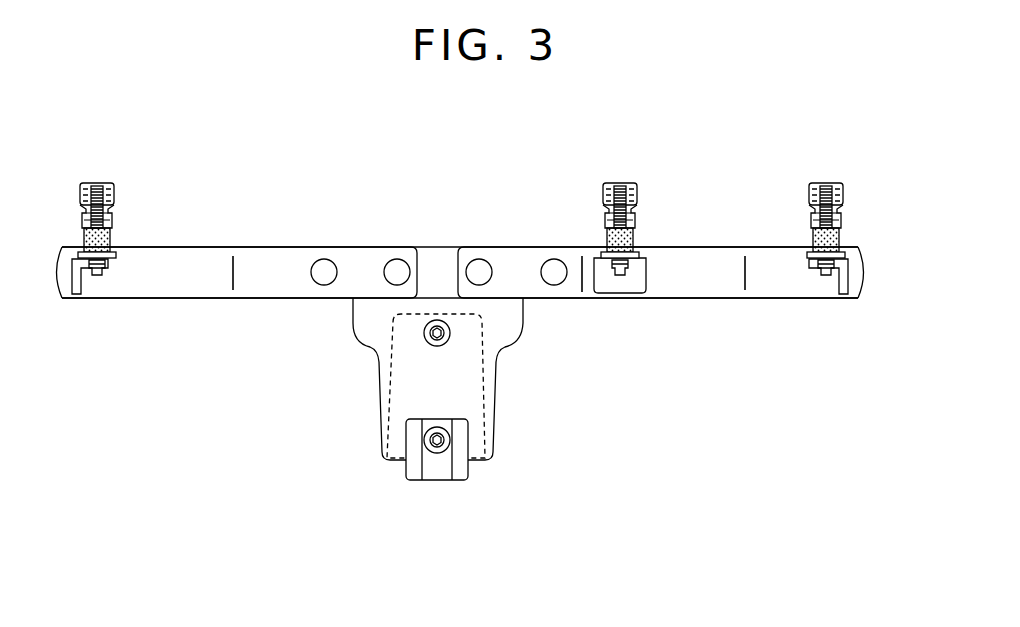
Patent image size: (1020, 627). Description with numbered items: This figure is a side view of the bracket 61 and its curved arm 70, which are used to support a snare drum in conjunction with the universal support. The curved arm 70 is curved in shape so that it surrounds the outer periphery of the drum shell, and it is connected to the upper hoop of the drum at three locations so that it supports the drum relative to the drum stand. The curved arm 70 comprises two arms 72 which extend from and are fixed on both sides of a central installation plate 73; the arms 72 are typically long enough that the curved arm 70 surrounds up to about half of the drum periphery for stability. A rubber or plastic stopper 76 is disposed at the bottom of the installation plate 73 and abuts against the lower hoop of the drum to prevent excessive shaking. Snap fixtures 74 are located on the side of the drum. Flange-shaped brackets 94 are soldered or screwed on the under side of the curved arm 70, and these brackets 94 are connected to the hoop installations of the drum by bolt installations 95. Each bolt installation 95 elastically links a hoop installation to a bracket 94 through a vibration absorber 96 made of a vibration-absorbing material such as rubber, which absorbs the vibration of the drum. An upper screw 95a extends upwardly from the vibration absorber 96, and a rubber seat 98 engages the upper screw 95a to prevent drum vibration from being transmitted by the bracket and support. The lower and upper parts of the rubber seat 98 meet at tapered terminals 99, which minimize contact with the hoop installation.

The bracket 61 is at (483, 408).
The curved arm 70 is at (348, 247).
The arms 72 is at (205, 287).
The installation plate 73 is at (511, 333).
The snap fixtures 74 is at (450, 440).
The stopper 76 is at (412, 476).
The flange-shaped brackets 94 is at (83, 290).
The bolt installations 95 is at (112, 234).
The upper screw 95a is at (96, 183).
The vibration absorber 96 is at (607, 236).
The rubber seat 98 is at (112, 186).
The terminals 99 is at (82, 210).